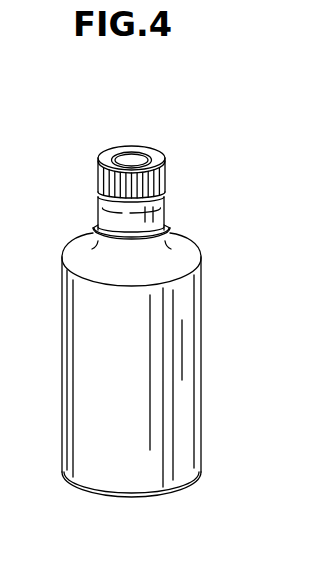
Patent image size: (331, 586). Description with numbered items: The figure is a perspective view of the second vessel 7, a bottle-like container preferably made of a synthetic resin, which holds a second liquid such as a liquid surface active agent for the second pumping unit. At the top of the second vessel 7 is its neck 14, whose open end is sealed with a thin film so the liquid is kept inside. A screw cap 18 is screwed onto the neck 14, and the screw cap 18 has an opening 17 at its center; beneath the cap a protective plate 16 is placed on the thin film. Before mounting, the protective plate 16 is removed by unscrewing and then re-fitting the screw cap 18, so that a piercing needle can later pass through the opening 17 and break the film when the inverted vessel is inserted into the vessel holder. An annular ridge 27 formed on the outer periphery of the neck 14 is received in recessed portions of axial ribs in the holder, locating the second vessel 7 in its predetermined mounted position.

The second vessel 7 is at (188, 370).
The neck 14 is at (163, 214).
The protective plate 16 is at (141, 156).
The opening 17 is at (125, 150).
The screw cap 18 is at (164, 178).
The annular ridge 27 is at (98, 228).